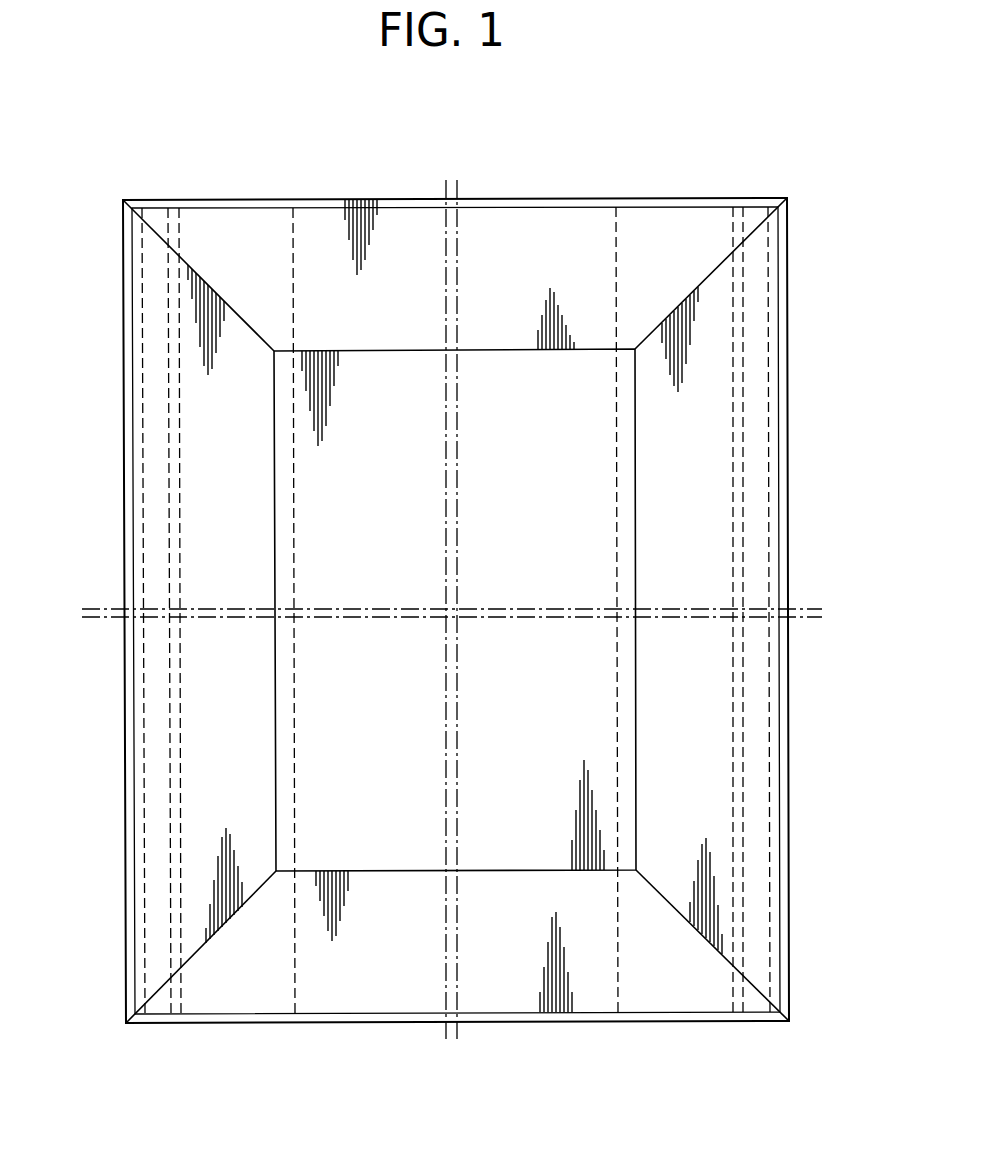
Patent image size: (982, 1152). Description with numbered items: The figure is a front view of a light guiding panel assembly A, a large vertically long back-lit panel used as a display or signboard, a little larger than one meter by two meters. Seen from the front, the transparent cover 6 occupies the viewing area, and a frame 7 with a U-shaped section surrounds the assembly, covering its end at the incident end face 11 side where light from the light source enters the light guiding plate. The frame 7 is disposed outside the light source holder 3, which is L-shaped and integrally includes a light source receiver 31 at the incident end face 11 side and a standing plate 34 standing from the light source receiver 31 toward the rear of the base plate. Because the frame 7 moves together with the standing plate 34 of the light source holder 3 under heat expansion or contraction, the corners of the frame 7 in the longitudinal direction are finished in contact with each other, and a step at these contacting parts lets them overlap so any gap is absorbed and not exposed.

The light guiding panel assembly A is at (778, 435).
The light source holder 3 is at (454, 610).
The transparent cover 6 is at (477, 708).
The frame 7 is at (490, 268).
The incident end face 11 is at (178, 430).
The light source receiver 31 is at (155, 795).
The standing plate 34 is at (290, 810).